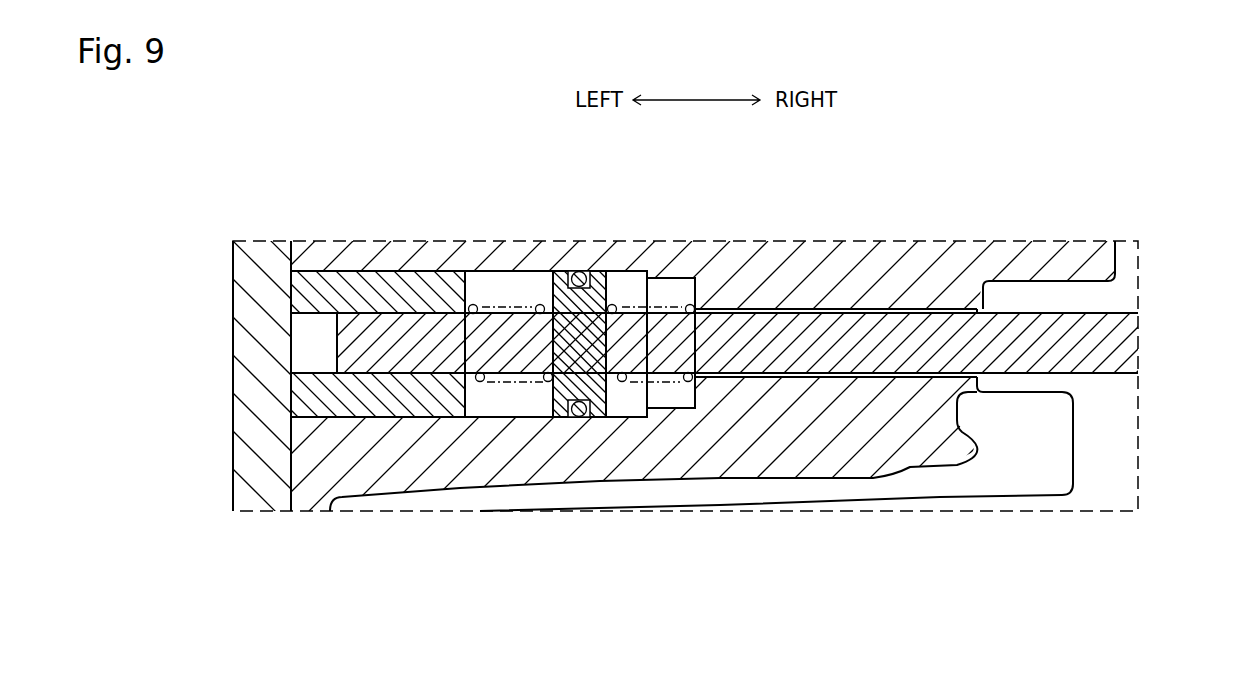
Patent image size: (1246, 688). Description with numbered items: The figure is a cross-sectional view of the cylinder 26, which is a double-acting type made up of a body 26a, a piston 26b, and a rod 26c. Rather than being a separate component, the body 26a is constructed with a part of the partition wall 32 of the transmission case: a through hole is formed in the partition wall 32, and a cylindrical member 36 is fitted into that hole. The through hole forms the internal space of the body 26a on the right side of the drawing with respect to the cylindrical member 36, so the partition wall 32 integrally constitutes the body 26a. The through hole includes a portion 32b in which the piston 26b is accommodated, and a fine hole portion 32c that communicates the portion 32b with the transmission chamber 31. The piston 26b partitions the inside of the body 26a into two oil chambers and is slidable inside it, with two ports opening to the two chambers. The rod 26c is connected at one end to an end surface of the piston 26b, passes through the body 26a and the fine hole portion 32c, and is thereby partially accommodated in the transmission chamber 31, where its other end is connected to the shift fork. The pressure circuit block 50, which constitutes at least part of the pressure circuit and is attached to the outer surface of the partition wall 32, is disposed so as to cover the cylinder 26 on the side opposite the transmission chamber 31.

The cylinder 26 is at (1043, 290).
The body 26a is at (400, 435).
The piston 26b is at (607, 285).
The rod 26c is at (833, 330).
The transmission chamber 31 is at (1103, 431).
The partition wall 32 is at (502, 273).
The portion 32b is at (522, 402).
The fine hole portion 32c is at (787, 377).
The cylindrical member 36 is at (381, 280).
The pressure circuit block 50 is at (262, 477).